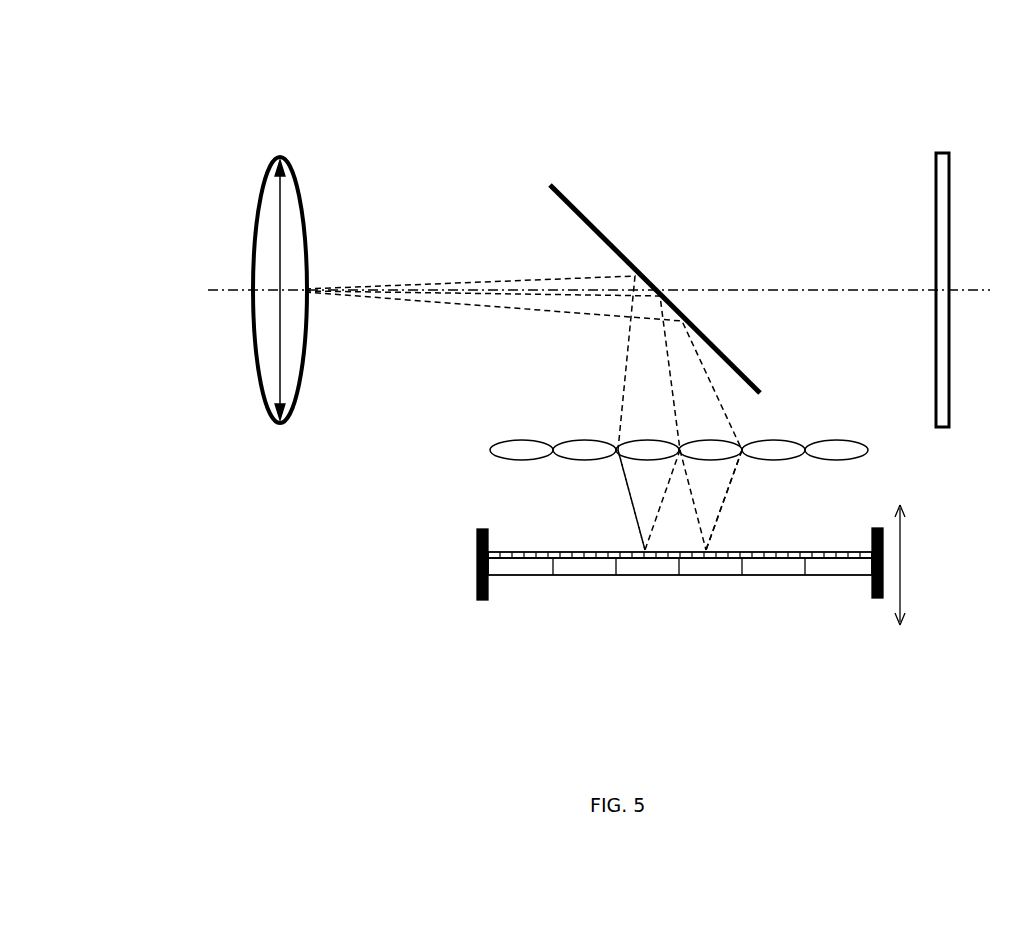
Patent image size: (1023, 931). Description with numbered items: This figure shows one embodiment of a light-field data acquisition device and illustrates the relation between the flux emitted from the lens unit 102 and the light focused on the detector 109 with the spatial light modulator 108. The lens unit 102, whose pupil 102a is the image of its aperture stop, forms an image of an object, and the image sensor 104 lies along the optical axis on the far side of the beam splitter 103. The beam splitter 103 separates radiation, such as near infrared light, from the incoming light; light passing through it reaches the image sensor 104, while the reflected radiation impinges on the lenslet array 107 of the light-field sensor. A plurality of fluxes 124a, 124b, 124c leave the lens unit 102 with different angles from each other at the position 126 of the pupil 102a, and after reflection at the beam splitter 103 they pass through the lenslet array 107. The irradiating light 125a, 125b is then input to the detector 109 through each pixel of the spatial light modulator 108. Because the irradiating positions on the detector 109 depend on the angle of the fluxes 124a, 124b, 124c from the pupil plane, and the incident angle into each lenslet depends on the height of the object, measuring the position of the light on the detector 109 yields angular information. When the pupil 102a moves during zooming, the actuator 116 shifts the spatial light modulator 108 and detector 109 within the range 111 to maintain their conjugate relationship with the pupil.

The lens unit 102 is at (293, 180).
The pupil 102a is at (283, 247).
The beam splitter 103 is at (565, 197).
The image sensor 104 is at (948, 150).
The lenslet array 107 is at (492, 452).
The spatial light modulator 108 is at (825, 550).
The detector 109 is at (672, 573).
The range 111 is at (905, 580).
The actuator 116 is at (477, 597).
The flux 124a is at (483, 278).
The flux 124b is at (528, 293).
The flux 124c is at (565, 313).
The irradiating light 125a is at (633, 513).
The irradiating light 125b is at (723, 507).
The position of the pupil 126 is at (280, 290).